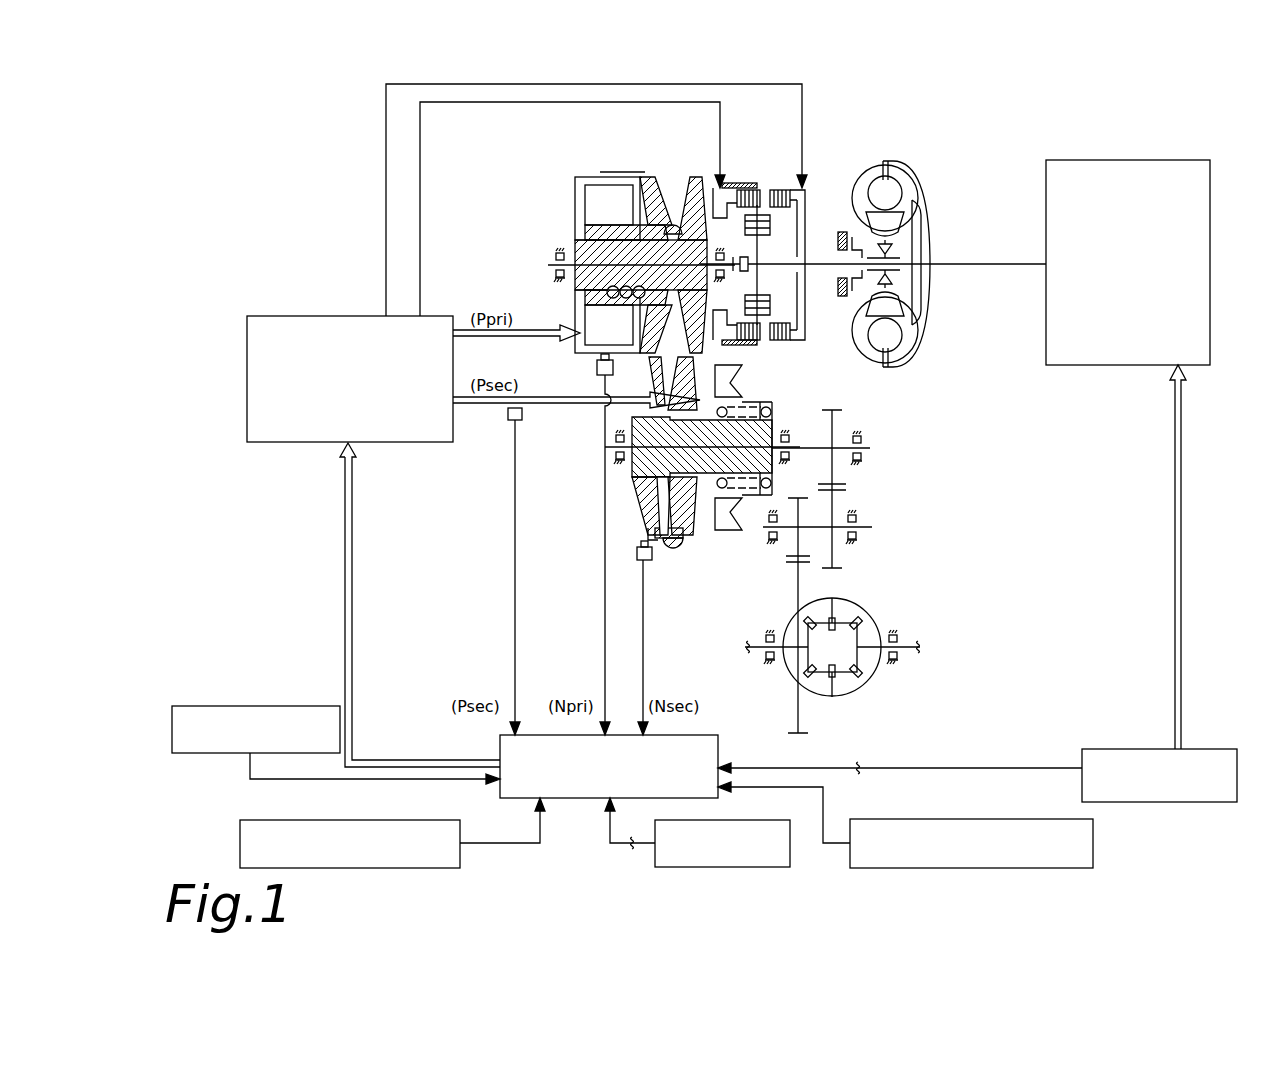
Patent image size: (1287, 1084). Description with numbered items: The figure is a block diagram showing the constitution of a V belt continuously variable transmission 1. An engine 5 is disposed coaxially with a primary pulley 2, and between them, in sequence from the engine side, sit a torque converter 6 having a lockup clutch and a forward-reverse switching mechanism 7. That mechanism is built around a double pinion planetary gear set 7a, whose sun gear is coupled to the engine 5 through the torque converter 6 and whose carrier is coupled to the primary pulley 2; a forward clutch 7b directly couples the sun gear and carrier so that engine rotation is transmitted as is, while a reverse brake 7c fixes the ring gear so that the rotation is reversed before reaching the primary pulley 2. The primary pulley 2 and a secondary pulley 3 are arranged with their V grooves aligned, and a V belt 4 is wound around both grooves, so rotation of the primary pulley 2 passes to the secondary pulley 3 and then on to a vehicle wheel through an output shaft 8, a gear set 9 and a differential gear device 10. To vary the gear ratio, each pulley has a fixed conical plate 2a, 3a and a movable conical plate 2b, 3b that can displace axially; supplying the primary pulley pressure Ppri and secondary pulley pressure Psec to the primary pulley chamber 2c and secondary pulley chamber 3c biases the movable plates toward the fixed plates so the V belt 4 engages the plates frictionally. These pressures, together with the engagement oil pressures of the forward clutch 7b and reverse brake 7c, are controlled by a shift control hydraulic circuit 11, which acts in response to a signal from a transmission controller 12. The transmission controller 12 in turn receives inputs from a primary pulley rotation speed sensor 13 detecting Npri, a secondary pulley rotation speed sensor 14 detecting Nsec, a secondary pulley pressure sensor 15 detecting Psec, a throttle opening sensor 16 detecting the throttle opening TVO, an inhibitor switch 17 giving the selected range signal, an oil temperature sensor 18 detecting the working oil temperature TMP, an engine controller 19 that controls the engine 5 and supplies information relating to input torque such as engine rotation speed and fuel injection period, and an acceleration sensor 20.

The V belt continuously variable transmission 1 is at (585, 168).
The primary pulley 2 is at (686, 170).
The fixed conical plate 2a is at (702, 172).
The movable conical plate 2b is at (645, 175).
The primary pulley chamber 2c is at (600, 210).
The secondary pulley 3 is at (745, 545).
The fixed conical plate 3a is at (647, 497).
The movable conical plate 3b is at (690, 540).
The secondary pulley chamber 3c is at (708, 530).
The V belt 4 is at (672, 224).
The engine 5 is at (1132, 158).
The torque converter 6 is at (882, 152).
The forward-reverse switching mechanism 7 is at (740, 170).
The double pinion planetary gear set 7a is at (764, 190).
The forward clutch 7b is at (782, 185).
The reverse brake 7c is at (752, 188).
The output shaft 8 is at (810, 447).
The gear set 9 is at (885, 476).
The differential gear device 10 is at (878, 602).
The shift control hydraulic circuit 11 is at (325, 314).
The transmission controller 12 is at (498, 748).
The primary pulley rotation speed sensor 13 is at (596, 367).
The secondary pulley rotation speed sensor 14 is at (653, 562).
The secondary pulley pressure sensor 15 is at (507, 422).
The throttle opening sensor 16 is at (238, 820).
The inhibitor switch 17 is at (740, 820).
The oil temperature sensor 18 is at (1093, 855).
The engine controller 19 is at (1212, 748).
The acceleration sensor 20 is at (266, 705).